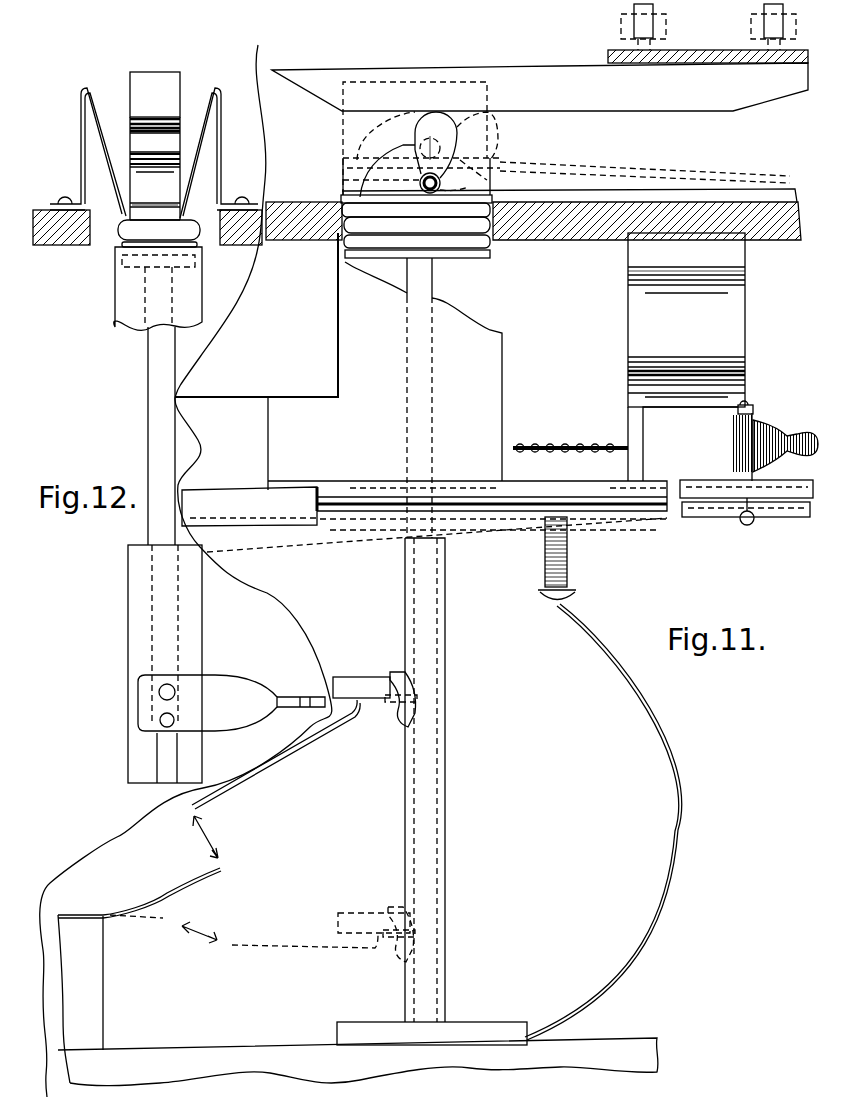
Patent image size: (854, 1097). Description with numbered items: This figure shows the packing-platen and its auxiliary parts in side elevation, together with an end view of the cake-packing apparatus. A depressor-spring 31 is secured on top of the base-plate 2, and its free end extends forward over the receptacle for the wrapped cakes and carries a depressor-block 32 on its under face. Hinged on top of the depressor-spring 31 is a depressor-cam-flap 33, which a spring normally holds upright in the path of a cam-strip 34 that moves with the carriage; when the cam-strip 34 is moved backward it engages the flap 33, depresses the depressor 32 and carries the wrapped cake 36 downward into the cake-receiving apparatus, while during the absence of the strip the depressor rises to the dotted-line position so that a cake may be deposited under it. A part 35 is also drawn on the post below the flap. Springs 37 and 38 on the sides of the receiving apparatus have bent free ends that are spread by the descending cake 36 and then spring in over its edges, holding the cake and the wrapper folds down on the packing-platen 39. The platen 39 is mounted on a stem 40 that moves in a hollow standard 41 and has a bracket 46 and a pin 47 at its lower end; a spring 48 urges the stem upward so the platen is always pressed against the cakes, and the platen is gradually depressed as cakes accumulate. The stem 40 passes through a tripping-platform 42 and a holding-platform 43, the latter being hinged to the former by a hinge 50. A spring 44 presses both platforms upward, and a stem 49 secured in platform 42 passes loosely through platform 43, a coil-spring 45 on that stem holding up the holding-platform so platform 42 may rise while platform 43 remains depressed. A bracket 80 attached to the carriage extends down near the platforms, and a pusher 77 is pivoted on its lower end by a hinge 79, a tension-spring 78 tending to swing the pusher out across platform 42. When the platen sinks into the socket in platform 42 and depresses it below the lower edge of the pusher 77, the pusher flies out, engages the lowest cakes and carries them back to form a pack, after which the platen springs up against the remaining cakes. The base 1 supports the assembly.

In FIG. 11, the base 1 is at (153, 1057).
In FIG. 12, the base-plate 2 is at (47, 245).
In FIG. 11, the base-plate 2 is at (782, 231).
In FIG. 12, the depressor-spring 31 is at (155, 203).
In FIG. 11, the depressor-spring 31 is at (615, 190).
In FIG. 12, the depressor-block 32 is at (155, 214).
In FIG. 11, the depressor-block 32 is at (416, 207).
In FIG. 12, the depressor-cam-flap 33 is at (155, 135).
In FIG. 11, the depressor-cam-flap 33 is at (436, 152).
In FIG. 12, the cam-strip 34 is at (155, 146).
In FIG. 11, the cam-strip 34 is at (398, 135).
In FIG. 12, the collar 35 is at (155, 178).
In FIG. 11, the collar 35 is at (421, 171).
In FIG. 12, the cake 36 is at (159, 233).
In FIG. 11, the cake 36 is at (417, 232).
In FIG. 12, the spring 37 is at (190, 204).
In FIG. 12, the spring 38 is at (118, 204).
In FIG. 11, the spring 38 is at (423, 136).
In FIG. 11, the packing-platen 39 is at (463, 258).
In FIG. 11, the stem 40 is at (419, 398).
In FIG. 11, the hollow standard 41 is at (432, 791).
In FIG. 11, the tripping-platform 42 is at (540, 505).
In FIG. 11, the holding-platform 43 is at (633, 530).
In FIG. 11, the spring 44 is at (678, 781).
In FIG. 11, the coil-spring 45 is at (567, 567).
In FIG. 11, the bracket 46 is at (400, 722).
In FIG. 11, the pin 47 is at (175, 690).
In FIG. 11, the spring 48 is at (248, 770).
In FIG. 11, the stem 49 is at (577, 602).
In FIG. 11, the hinge 50 is at (749, 525).
In FIG. 11, the pusher 77 is at (723, 444).
In FIG. 11, the tension-spring 78 is at (543, 447).
In FIG. 11, the hinge 79 is at (752, 407).
In FIG. 11, the bracket 80 is at (686, 320).